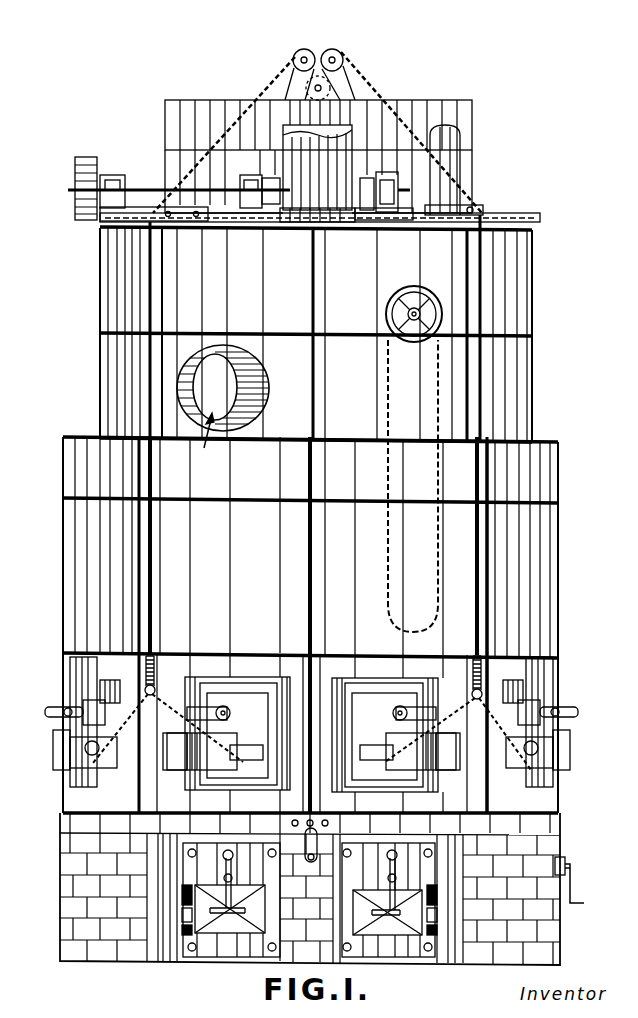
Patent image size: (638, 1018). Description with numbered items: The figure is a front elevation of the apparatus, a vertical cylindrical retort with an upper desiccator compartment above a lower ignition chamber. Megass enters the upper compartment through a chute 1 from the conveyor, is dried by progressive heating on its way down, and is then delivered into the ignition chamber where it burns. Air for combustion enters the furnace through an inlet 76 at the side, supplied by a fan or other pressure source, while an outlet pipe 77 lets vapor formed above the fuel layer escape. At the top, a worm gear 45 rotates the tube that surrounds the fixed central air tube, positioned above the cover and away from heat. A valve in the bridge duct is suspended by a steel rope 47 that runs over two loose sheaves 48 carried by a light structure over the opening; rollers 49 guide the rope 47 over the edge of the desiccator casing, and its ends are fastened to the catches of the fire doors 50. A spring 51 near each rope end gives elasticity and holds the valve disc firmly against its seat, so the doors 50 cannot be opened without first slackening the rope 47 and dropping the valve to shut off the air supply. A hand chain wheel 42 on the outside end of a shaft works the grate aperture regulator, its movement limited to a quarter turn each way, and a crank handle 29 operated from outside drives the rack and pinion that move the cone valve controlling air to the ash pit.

The chute 1 is at (300, 132).
The crank handle 29 is at (577, 905).
The hand chain wheel 42 is at (447, 306).
The worm gear 45 is at (372, 182).
The steel rope 47 is at (482, 262).
The loose sheaves 48 is at (333, 52).
The rollers 49 is at (480, 213).
The fire doors 50 is at (243, 773).
The spring 51 is at (478, 672).
The inlet 76 is at (200, 378).
The outlet pipe 77 is at (448, 140).